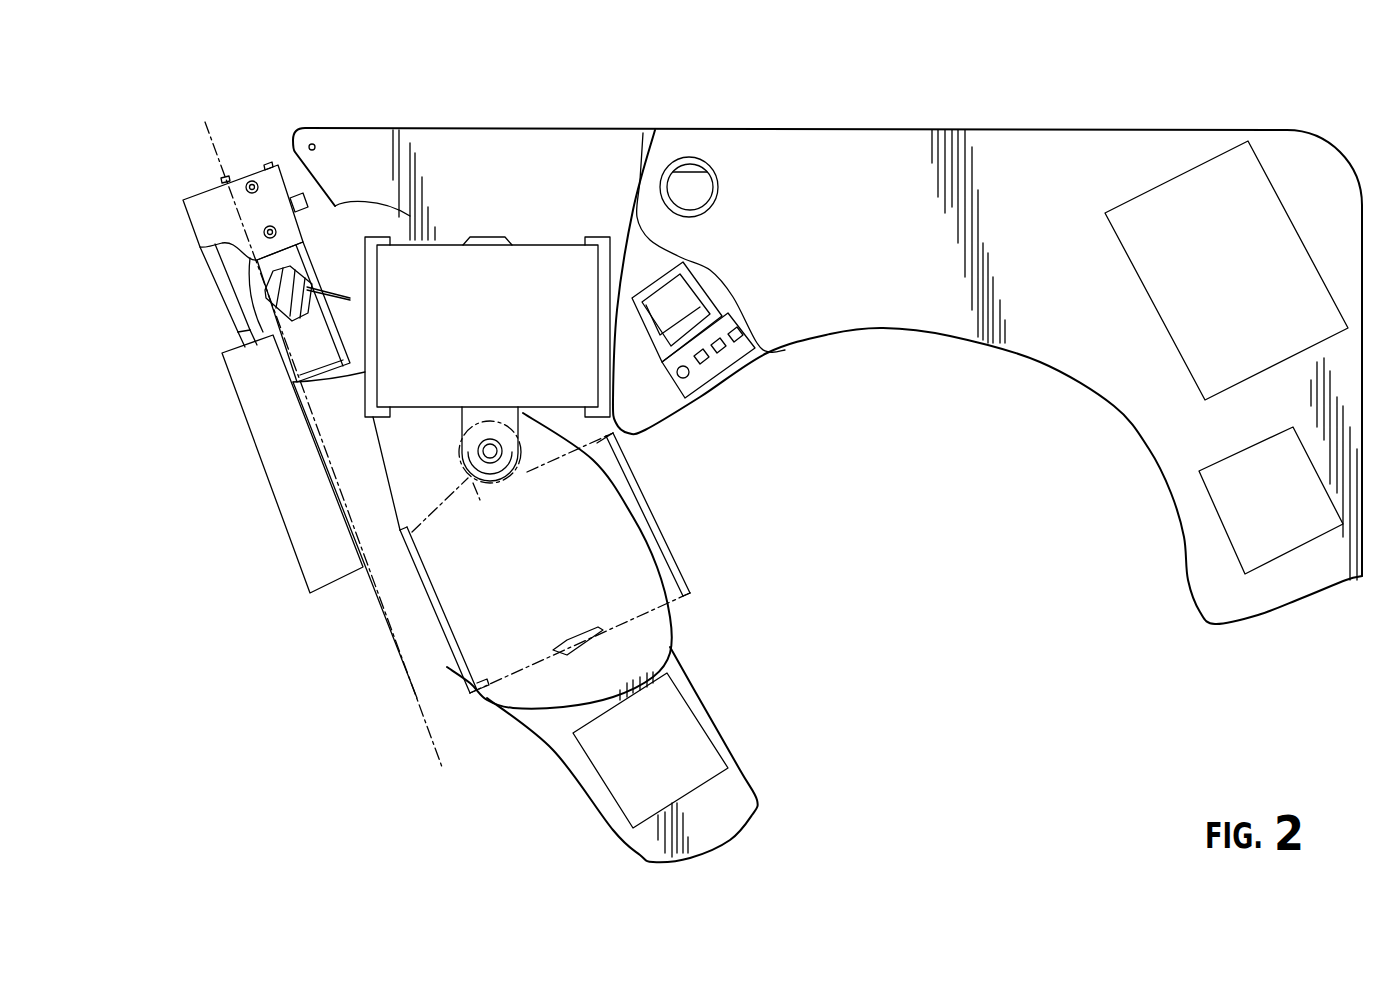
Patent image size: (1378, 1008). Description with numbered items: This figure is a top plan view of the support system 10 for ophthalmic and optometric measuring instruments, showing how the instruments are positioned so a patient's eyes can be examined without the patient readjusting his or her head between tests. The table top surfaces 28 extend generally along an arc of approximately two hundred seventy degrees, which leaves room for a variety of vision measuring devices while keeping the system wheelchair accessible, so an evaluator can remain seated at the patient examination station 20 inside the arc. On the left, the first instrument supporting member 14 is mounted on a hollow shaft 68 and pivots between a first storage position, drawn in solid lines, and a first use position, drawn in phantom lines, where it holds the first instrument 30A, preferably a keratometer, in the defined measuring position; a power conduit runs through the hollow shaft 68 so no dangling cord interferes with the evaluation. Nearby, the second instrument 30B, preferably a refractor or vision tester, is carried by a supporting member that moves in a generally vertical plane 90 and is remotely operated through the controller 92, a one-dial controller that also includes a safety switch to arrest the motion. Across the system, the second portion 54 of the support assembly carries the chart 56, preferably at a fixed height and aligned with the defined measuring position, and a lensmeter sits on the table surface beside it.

The support system 10 is at (872, 114).
The patient examination station 20 is at (891, 485).
The table top surfaces 28 is at (470, 197).
The first instrument 30A is at (538, 257).
The second instrument 30B is at (250, 430).
The first instrument supporting member 14 is at (503, 452).
The hollow shaft 68 is at (507, 415).
The second portion 54 is at (1045, 153).
The chart 56 is at (1258, 205).
The generally vertical plane 90 is at (417, 693).
The controller 92 is at (702, 755).